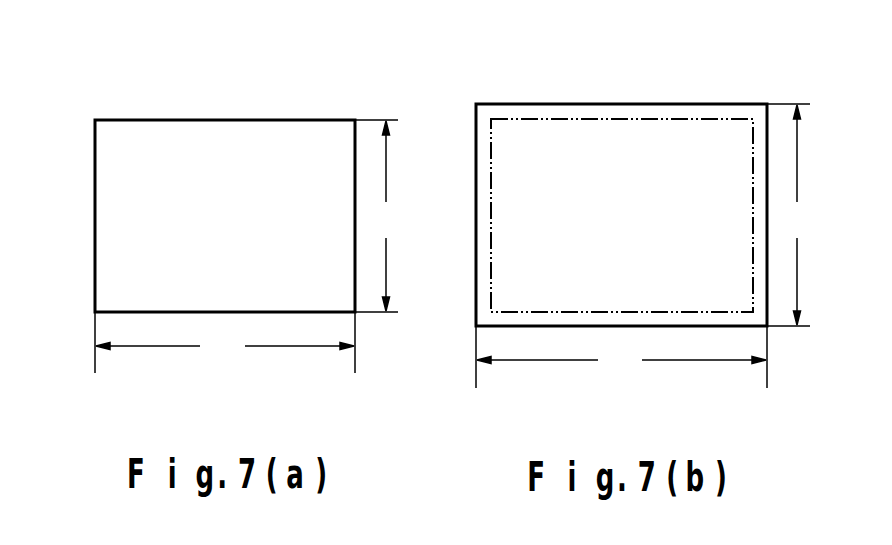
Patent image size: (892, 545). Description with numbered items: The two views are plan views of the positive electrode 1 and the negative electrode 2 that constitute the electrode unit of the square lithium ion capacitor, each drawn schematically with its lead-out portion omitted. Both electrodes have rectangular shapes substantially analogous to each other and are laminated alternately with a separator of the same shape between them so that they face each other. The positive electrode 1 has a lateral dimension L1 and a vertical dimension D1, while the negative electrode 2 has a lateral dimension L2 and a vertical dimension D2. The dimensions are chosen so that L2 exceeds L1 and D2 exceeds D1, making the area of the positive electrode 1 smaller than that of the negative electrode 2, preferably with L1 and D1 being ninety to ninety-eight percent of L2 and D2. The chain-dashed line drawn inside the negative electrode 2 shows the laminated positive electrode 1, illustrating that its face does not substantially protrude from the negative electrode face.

In FIG. 7A, the positive electrode 1 is at (267, 137).
In FIG. 7B, the positive electrode 1 is at (708, 118).
In FIG. 7B, the negative electrode 2 is at (596, 110).
In FIG. 7A, the vertical dimension of the positive electrode D1 is at (378, 216).
In FIG. 7A, the lateral dimension of the positive electrode L1 is at (225, 342).
In FIG. 7B, the vertical dimension of the negative electrode D2 is at (789, 215).
In FIG. 7B, the lateral dimension of the negative electrode L2 is at (621, 357).